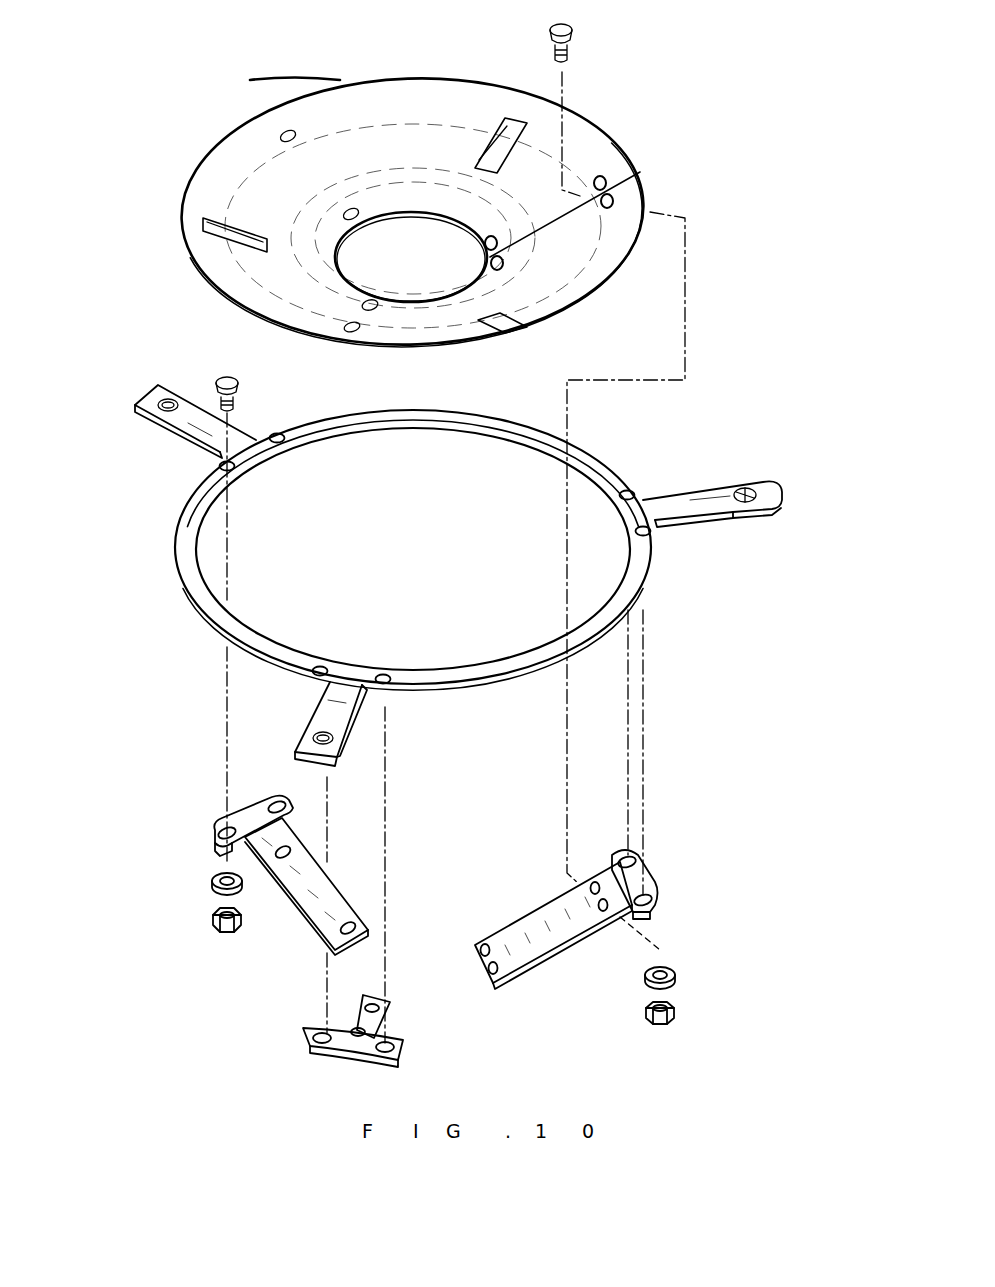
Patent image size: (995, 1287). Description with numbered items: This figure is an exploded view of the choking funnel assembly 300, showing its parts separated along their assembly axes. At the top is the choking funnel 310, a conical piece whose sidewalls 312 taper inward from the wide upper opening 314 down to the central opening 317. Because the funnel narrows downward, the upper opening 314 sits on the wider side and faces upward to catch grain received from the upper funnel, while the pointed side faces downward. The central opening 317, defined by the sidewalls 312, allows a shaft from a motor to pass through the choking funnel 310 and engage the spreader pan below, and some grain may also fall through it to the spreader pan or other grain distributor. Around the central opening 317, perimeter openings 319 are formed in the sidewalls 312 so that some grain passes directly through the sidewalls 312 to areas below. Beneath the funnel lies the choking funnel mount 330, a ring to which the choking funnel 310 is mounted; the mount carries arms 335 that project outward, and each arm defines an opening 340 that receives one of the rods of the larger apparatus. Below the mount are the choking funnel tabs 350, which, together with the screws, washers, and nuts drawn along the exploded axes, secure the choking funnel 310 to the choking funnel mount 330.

The choking funnel assembly 300 is at (706, 372).
The choking funnel 310 is at (592, 125).
The sidewalls 312 is at (437, 96).
The upper opening 314 is at (304, 98).
The central opening 317 is at (402, 255).
The perimeter openings 319 is at (505, 125).
The choking funnel mount 330 is at (590, 451).
The arms 335 is at (195, 437).
The openings 340 is at (166, 398).
The choking funnel tabs 350 is at (655, 882).